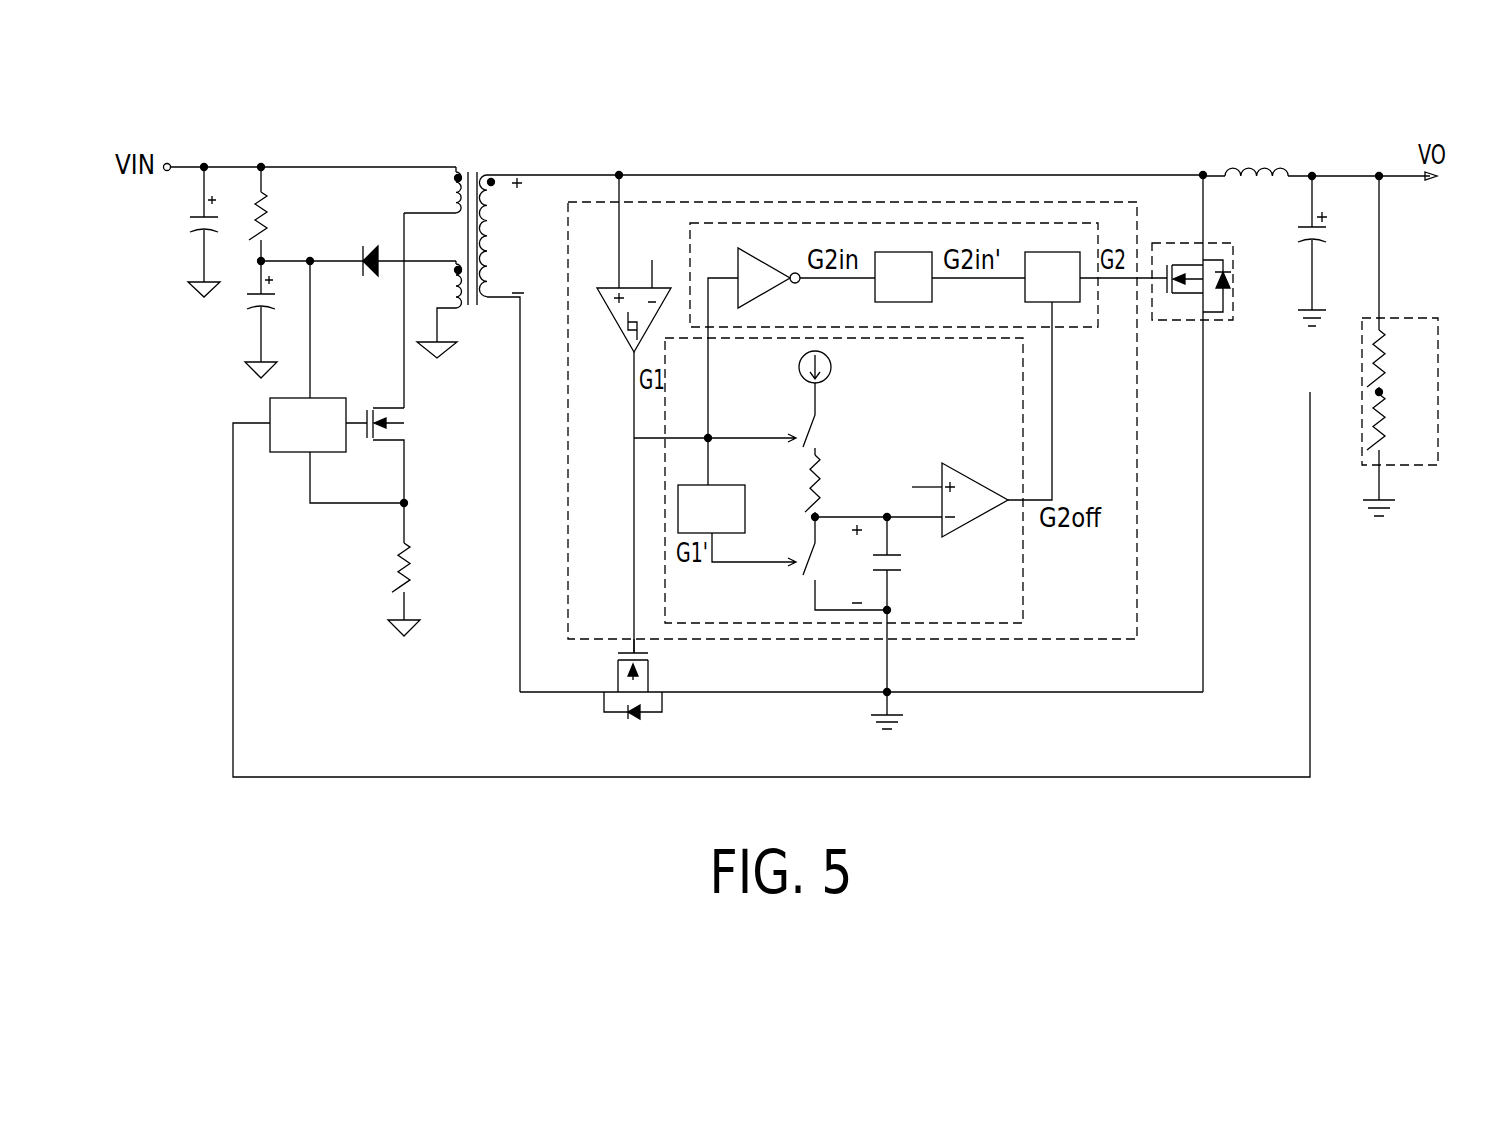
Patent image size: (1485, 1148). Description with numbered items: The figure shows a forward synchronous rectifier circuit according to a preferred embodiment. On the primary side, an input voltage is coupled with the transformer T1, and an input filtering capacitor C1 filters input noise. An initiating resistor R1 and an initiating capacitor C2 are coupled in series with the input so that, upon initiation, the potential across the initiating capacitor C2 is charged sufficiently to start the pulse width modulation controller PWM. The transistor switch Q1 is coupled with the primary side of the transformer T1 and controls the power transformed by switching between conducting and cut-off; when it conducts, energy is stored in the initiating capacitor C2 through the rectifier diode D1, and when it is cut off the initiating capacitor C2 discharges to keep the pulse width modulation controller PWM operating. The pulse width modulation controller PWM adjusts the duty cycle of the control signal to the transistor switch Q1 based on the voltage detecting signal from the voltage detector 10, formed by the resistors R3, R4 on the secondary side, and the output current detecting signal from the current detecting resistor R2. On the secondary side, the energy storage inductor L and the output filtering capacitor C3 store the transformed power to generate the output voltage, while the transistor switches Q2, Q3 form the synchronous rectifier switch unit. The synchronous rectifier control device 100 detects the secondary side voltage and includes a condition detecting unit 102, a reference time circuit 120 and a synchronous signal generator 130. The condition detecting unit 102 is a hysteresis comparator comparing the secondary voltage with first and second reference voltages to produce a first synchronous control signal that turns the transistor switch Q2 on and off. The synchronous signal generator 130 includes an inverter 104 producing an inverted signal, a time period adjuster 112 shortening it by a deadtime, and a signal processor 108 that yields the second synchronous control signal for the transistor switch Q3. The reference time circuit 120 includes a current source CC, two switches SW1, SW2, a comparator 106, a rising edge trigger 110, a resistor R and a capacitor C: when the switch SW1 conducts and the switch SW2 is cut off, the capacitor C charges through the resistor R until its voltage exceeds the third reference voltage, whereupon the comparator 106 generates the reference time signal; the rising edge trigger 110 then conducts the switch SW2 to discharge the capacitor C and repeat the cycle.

The voltage detector 10 is at (1438, 380).
The synchronous rectifier control device 100 is at (1137, 520).
The condition detecting unit 102 is at (618, 326).
The inverter 104 is at (780, 268).
The comparator 106 is at (965, 462).
The signal processor 108 is at (1052, 277).
The rising edge trigger 110 is at (711, 509).
The time period adjuster 112 is at (903, 277).
The reference time circuit 120 is at (1023, 602).
The synchronous signal generator 130 is at (1063, 330).
The transformer T1 is at (803, 413).
The transistor switch Q1 is at (404, 455).
The transistor switch Q2 is at (635, 699).
The transistor switch Q3 is at (1207, 281).
The pulse width modulation controller PWM is at (308, 425).
The input filtering capacitor C1 is at (188, 232).
The initiating capacitor C2 is at (247, 319).
The output filtering capacitor C3 is at (1320, 251).
The initiating resistor R1 is at (270, 214).
The current detecting resistor R2 is at (394, 569).
The resistor R3 is at (1395, 285).
The resistor R4 is at (1393, 455).
The rectifier diode D1 is at (372, 244).
The energy storage inductor L is at (1316, 156).
The capacitor C is at (882, 616).
The resistor R is at (803, 486).
The current source CC is at (834, 367).
The switch SW1 is at (792, 419).
The switch SW2 is at (828, 564).